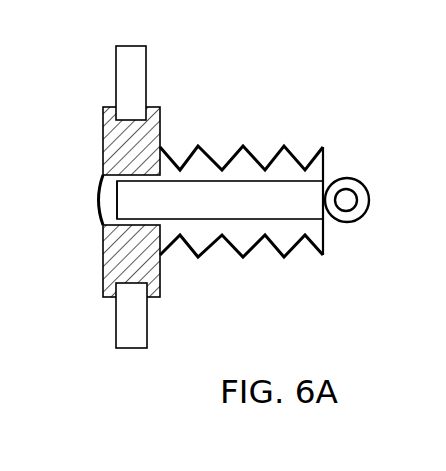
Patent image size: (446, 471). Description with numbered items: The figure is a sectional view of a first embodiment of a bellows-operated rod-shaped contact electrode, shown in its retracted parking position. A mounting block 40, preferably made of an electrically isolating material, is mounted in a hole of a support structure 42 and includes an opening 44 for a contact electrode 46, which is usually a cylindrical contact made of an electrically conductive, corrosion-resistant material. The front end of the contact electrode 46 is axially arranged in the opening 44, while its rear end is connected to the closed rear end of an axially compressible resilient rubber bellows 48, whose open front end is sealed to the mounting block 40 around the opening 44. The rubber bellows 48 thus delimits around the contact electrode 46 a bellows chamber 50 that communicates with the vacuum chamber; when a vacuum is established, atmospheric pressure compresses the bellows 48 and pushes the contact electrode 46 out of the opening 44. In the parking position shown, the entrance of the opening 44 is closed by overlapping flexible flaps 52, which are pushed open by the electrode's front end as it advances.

The mounting block 40 is at (105, 123).
The support structure 42 is at (125, 327).
The opening 44 is at (110, 219).
The contact electrode 46 is at (232, 197).
The axially compressible resilient rubber bellows 48 is at (202, 256).
The bellows chamber 50 is at (277, 238).
The flexible flaps 52 is at (96, 195).